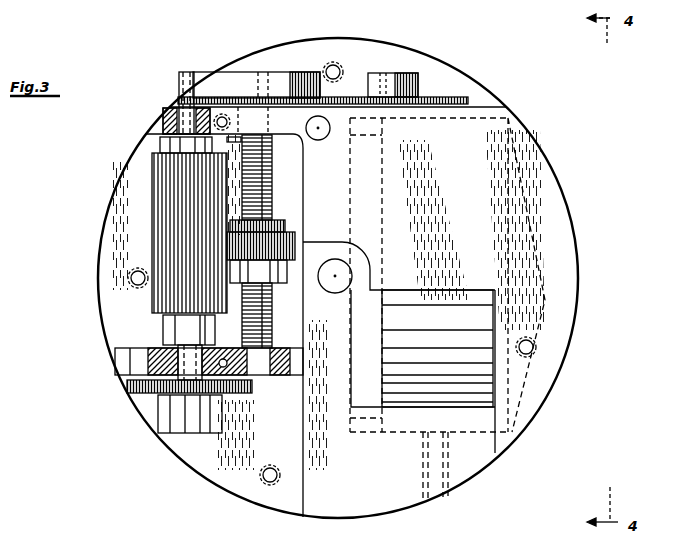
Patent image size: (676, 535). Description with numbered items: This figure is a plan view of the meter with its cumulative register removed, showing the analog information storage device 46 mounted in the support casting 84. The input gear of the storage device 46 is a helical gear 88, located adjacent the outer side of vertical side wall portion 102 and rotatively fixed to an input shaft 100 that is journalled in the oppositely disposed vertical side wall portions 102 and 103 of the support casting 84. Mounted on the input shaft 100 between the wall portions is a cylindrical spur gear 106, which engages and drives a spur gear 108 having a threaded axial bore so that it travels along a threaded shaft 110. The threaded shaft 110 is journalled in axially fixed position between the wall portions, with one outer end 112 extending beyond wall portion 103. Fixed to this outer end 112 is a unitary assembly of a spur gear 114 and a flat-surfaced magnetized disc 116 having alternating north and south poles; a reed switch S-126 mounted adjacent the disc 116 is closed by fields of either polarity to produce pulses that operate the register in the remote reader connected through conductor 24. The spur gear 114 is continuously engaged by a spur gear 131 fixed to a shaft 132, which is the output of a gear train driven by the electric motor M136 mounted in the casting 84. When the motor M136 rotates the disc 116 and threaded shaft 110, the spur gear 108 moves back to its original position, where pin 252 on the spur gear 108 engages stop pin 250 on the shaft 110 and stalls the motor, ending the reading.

The multiple-wire electrical conductor 24 is at (438, 483).
The analog information storage device 46 is at (112, 190).
The support casting 84 is at (552, 188).
The helical gear 88 is at (130, 395).
The input shaft 100 is at (178, 367).
The vertical side wall portion 102 is at (130, 349).
The vertical side wall portion 103 is at (165, 113).
The cylindrical spur gear 106 is at (152, 246).
The spur gear 108 is at (295, 242).
The threaded shaft 110 is at (272, 327).
The outer end of threaded shaft 112 is at (263, 73).
The spur gear 114 is at (183, 108).
The magnetized disc 116 is at (203, 57).
The spur gear 131 is at (468, 97).
The shaft 132 is at (395, 73).
The stop pin 250 is at (231, 137).
The pin 252 is at (243, 204).
The reed switch S-126 is at (316, 140).
The electric motor M136 is at (413, 390).